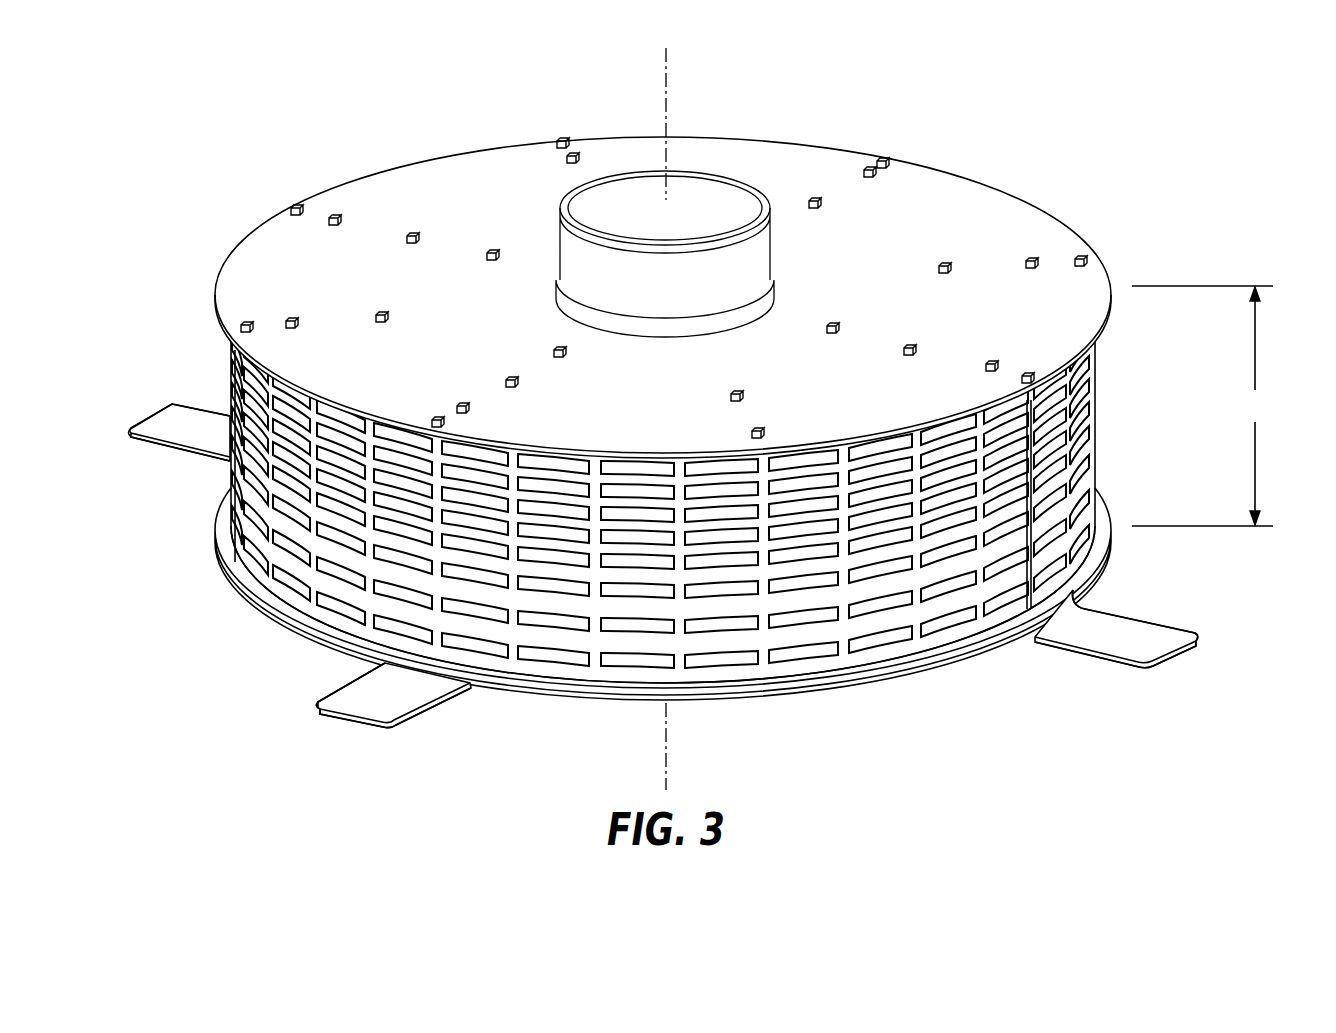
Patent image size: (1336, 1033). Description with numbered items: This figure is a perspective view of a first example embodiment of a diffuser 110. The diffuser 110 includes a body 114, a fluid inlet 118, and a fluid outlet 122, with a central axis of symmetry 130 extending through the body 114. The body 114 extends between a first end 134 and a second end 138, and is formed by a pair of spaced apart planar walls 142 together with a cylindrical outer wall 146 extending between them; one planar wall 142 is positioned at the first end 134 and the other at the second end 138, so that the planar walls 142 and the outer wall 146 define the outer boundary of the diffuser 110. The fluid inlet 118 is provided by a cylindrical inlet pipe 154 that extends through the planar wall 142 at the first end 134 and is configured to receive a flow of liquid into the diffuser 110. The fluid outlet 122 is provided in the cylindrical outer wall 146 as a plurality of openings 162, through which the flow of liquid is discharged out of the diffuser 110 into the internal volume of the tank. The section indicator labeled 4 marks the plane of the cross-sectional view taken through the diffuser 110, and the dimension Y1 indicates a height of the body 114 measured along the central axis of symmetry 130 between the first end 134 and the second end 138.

The diffuser 110 is at (674, 419).
The body 114 is at (678, 498).
The fluid inlet 118 is at (713, 208).
The fluid outlet 122 is at (1100, 531).
The central axis of symmetry 130 is at (666, 104).
The first end 134 is at (328, 188).
The second end 138 is at (258, 607).
The pair of spaced apart planar walls 142 is at (663, 421).
The cylindrical outer wall 146 is at (343, 525).
The cylindrical inlet pipe 154 is at (643, 209).
The plurality of openings 162 is at (1053, 515).
The section view indicator 4 is at (268, 204).
The height dimension Y1 is at (1202, 406).